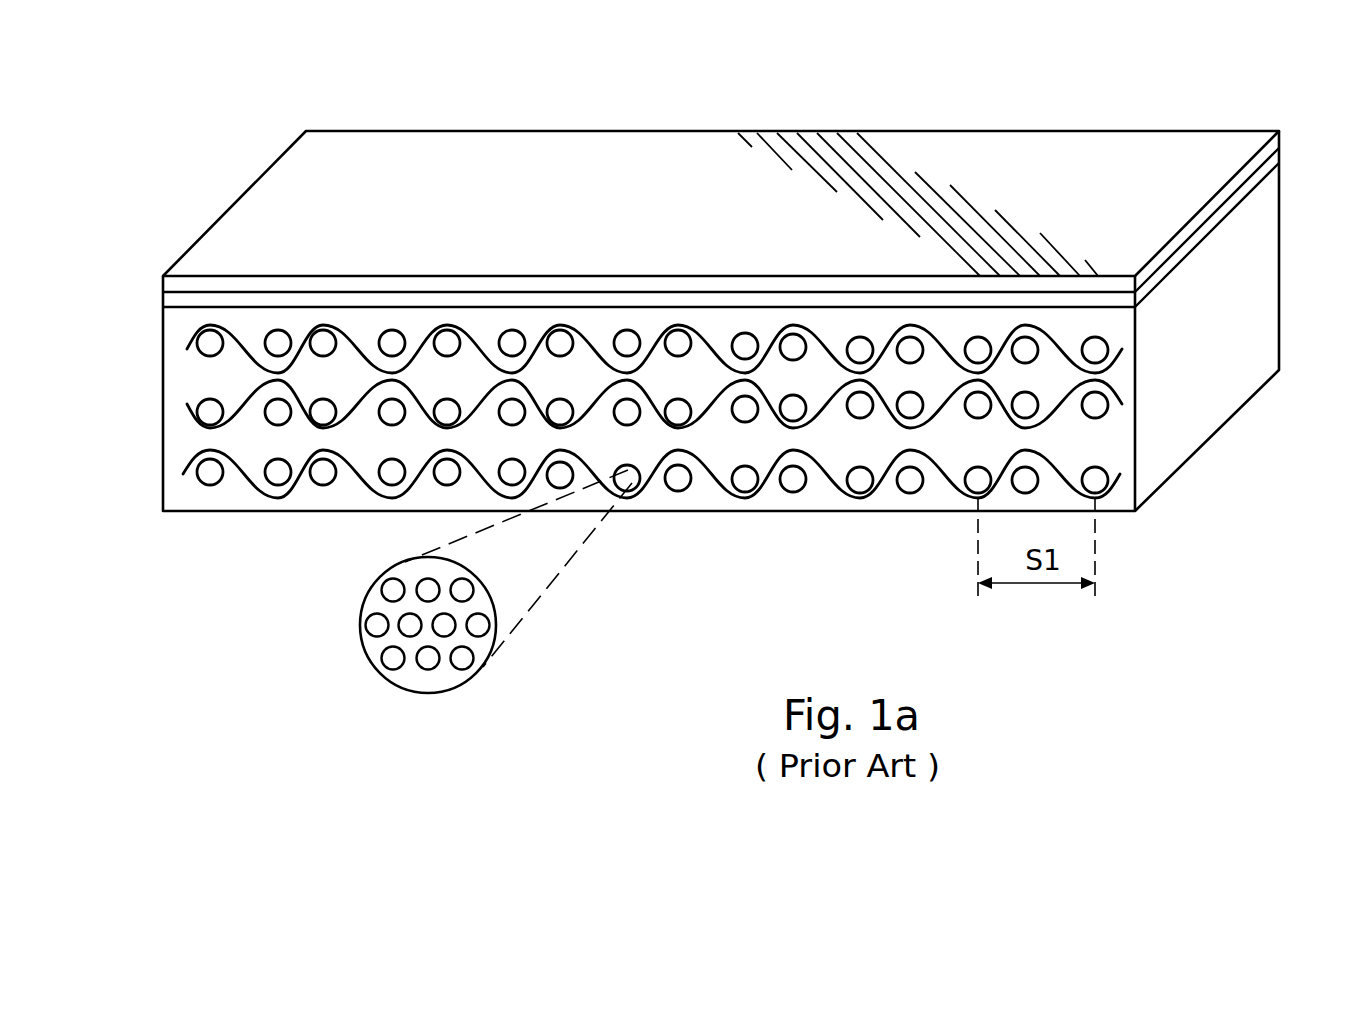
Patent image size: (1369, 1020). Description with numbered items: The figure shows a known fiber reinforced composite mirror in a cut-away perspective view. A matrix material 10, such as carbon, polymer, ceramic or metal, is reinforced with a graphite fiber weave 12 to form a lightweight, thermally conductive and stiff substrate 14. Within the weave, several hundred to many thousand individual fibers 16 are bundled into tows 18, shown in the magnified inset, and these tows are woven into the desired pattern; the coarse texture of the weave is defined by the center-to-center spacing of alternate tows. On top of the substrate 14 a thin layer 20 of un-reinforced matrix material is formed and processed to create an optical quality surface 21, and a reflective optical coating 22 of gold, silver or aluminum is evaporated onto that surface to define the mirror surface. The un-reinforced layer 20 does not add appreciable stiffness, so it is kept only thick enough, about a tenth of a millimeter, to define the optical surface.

The matrix material 10 is at (1224, 350).
The graphite fiber weave 12 is at (838, 490).
The substrate 14 is at (586, 499).
The fibers 16 is at (393, 670).
The tows 18 is at (368, 588).
The thin layer of un-reinforced matrix material 20 is at (163, 298).
The optical quality surface 21 is at (1247, 187).
The reflective optical coating 22 is at (340, 189).